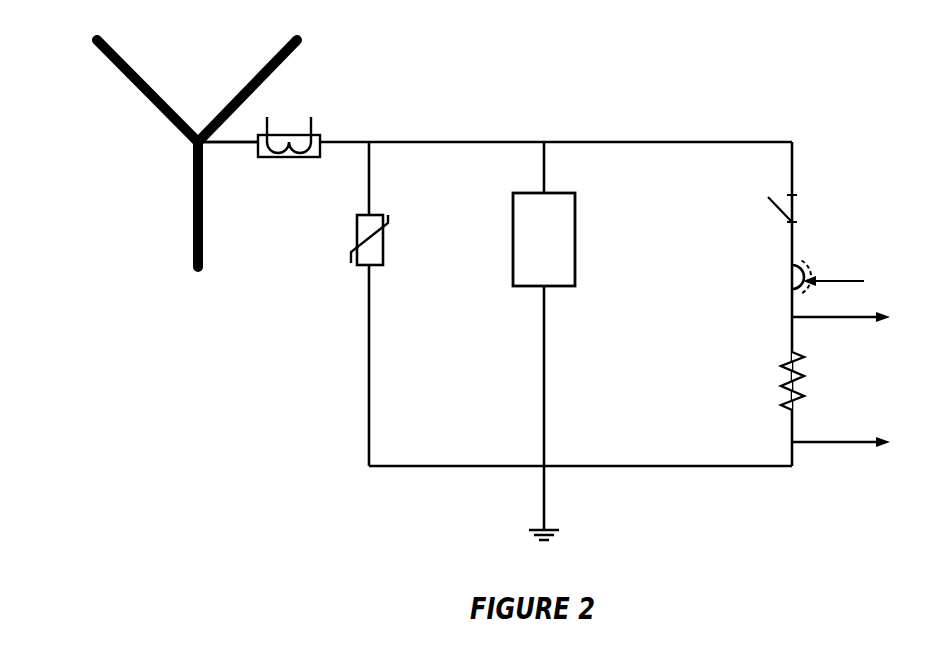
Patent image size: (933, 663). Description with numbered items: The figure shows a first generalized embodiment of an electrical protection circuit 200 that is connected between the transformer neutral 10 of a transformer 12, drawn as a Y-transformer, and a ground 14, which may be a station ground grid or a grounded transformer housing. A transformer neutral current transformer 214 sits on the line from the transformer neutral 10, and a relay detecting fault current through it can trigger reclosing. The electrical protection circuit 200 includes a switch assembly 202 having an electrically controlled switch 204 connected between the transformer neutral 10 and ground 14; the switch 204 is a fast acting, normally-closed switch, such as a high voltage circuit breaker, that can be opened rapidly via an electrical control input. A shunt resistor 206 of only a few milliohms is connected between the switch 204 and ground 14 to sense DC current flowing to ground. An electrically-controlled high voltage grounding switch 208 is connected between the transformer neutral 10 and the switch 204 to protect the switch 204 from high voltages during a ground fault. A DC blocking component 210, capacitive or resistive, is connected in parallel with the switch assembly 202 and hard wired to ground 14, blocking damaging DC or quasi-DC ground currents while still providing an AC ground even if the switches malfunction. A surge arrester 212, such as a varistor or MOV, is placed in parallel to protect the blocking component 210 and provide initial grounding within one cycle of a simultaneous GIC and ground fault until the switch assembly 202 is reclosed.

The transformer 12 is at (114, 122).
The transformer neutral 10 is at (190, 143).
The transformer neutral current transformer 214 is at (322, 136).
The surge arrester 212 is at (386, 253).
The DC blocking component 210 is at (577, 218).
The switch assembly 202 is at (903, 131).
The high voltage grounding switch 208 is at (797, 200).
The electrically controlled switch 204 is at (790, 291).
The shunt resistor 206 is at (802, 376).
The electrical protection circuit 200 is at (286, 474).
The ground 14 is at (555, 530).